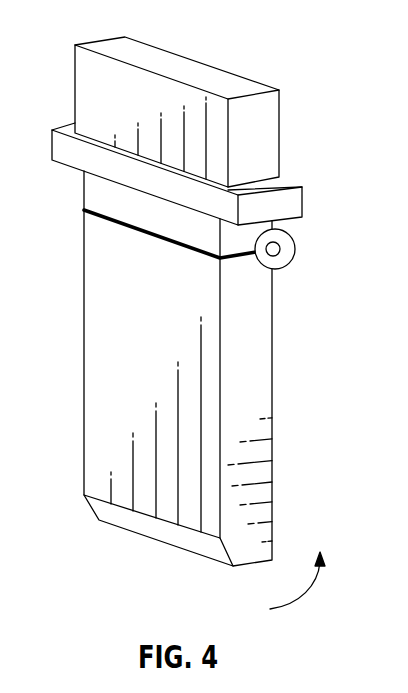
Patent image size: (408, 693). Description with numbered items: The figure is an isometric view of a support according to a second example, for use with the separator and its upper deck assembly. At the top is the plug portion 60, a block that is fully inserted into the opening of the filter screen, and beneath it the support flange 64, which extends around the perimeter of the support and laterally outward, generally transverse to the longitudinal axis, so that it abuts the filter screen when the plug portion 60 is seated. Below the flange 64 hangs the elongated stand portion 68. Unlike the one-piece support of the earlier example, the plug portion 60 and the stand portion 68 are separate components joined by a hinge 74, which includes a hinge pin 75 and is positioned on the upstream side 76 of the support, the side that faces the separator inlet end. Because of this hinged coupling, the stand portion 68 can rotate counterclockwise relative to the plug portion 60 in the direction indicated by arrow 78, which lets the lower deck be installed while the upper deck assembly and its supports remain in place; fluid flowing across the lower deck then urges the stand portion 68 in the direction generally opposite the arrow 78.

The plug portion 60 is at (86, 71).
The support flange 64 is at (292, 203).
The stand portion 68 is at (108, 457).
The hinge 74 is at (283, 264).
The hinge pin 75 is at (281, 251).
The upstream side 76 is at (222, 388).
The arrow 78 is at (307, 597).